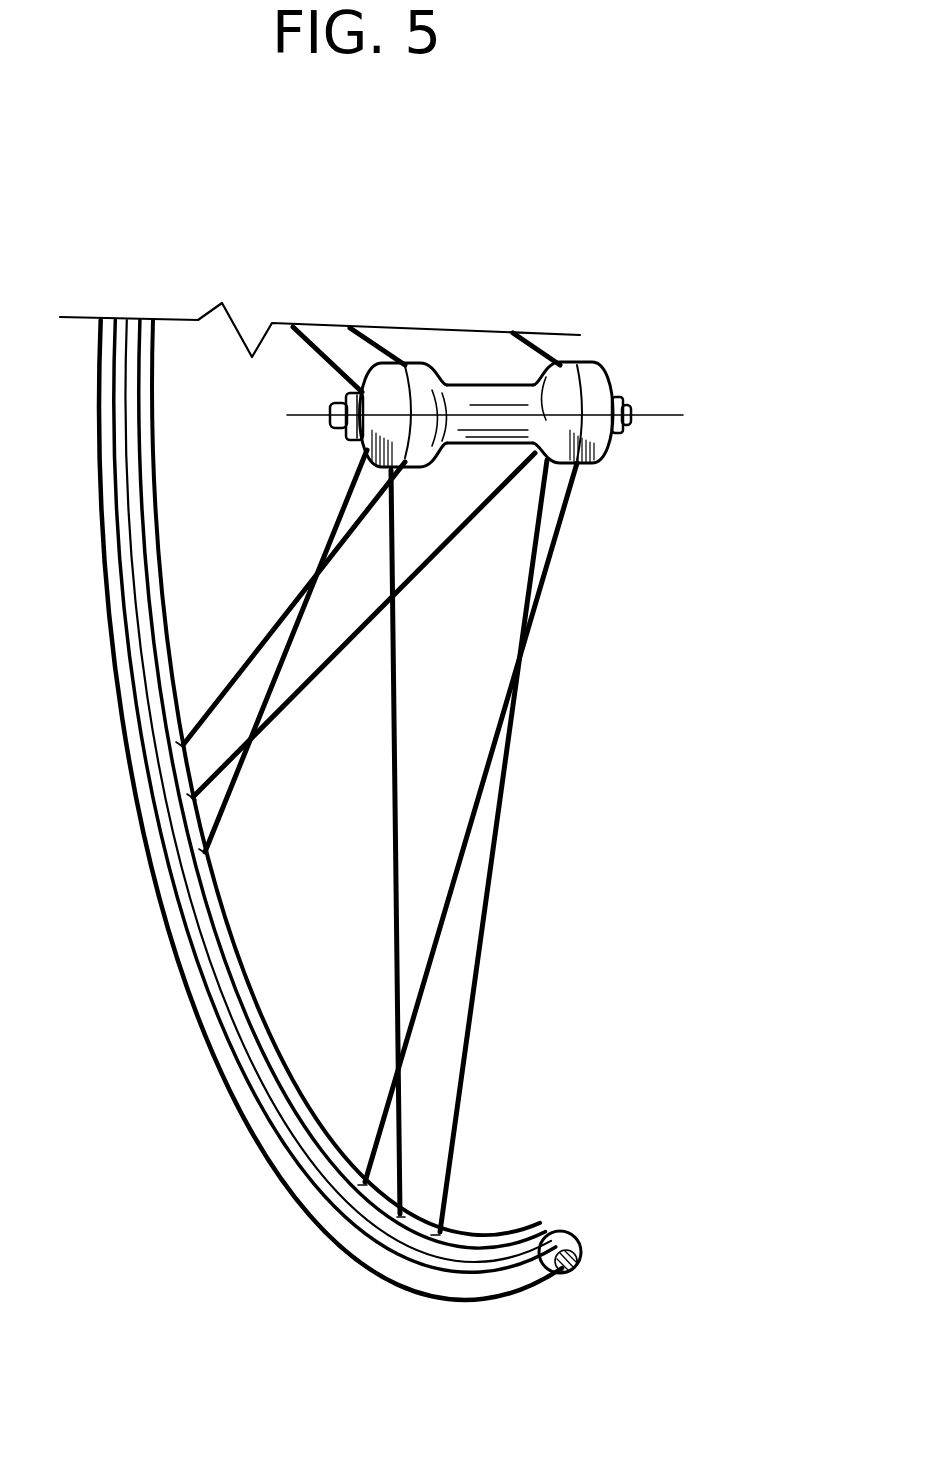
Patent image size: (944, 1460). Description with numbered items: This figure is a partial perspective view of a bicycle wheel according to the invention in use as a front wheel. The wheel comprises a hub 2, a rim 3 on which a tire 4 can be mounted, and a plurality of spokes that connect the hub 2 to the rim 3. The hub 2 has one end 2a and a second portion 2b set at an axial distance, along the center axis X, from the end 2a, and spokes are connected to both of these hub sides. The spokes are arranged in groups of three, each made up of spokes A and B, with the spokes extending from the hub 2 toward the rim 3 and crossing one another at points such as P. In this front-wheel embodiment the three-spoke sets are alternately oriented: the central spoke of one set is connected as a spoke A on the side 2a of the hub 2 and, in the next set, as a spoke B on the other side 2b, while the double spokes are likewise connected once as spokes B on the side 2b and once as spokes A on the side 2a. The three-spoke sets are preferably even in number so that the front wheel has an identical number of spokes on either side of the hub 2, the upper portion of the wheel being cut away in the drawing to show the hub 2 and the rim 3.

The hub 2 is at (511, 341).
The end of the hub 2a is at (413, 387).
The second portion of the hub 2b is at (583, 378).
The center axis X is at (657, 410).
The spoke crossing point P is at (317, 572).
The spoke A is at (280, 653).
The spoke B is at (283, 708).
The rim 3 is at (483, 1245).
The tire 4 is at (478, 1302).